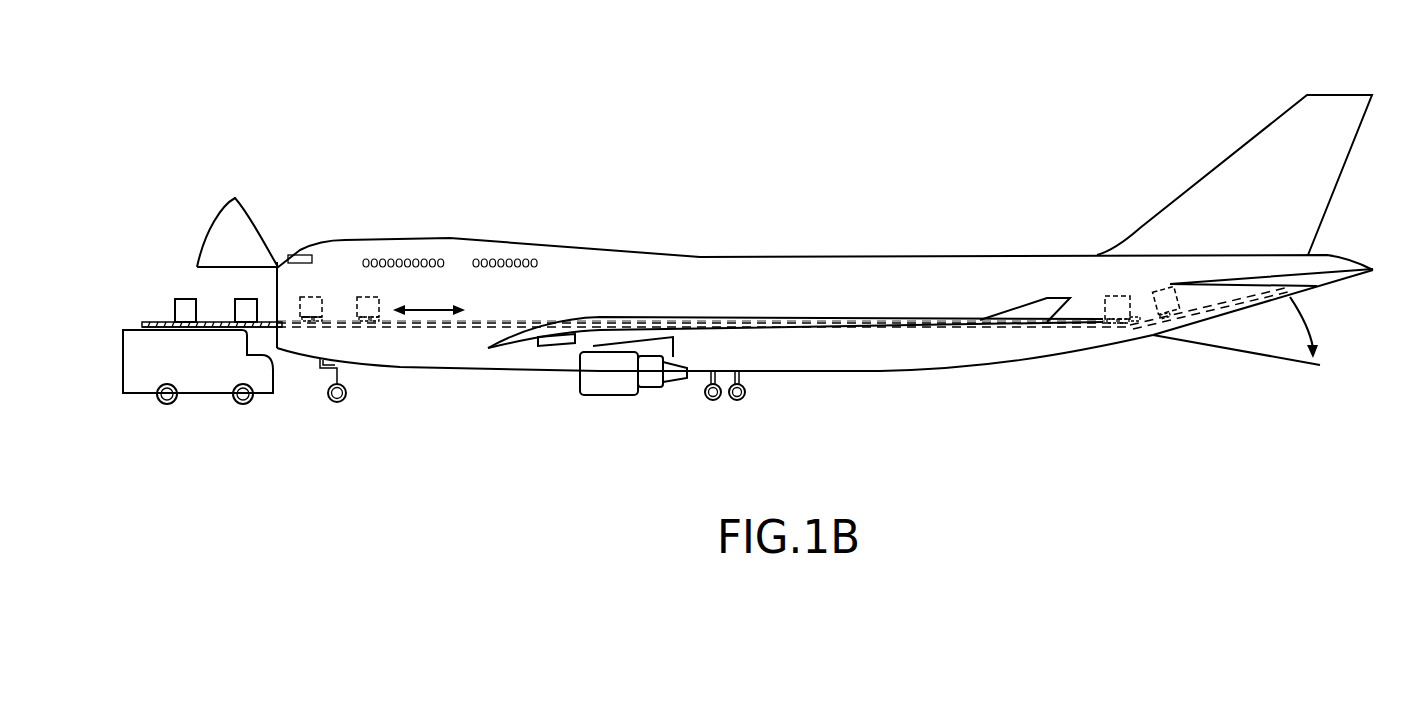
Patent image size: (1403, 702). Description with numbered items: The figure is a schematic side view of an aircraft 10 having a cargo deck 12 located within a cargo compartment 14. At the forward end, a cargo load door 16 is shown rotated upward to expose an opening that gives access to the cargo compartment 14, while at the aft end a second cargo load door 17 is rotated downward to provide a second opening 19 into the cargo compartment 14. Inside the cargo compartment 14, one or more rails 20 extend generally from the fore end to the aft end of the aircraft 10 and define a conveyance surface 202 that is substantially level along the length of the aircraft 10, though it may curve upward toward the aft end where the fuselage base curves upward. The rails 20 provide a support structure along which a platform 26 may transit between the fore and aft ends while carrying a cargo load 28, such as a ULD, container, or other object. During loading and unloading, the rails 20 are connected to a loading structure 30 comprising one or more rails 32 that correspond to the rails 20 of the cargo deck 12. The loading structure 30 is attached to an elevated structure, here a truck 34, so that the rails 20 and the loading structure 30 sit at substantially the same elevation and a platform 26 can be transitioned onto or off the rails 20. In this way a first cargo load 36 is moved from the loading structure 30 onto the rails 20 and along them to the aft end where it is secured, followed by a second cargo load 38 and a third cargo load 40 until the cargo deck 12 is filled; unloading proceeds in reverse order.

The aircraft 10 is at (343, 133).
The cargo deck 12 is at (363, 327).
The cargo compartment 14 is at (642, 264).
The cargo load door 16 is at (228, 212).
The second cargo load door 17 is at (1245, 354).
The second opening 19 is at (1328, 318).
The rails 20 is at (422, 345).
The conveyance surface 202 is at (512, 312).
The platform 26 is at (165, 322).
The cargo load 28 is at (186, 299).
The loading structure 30 is at (142, 328).
The rails 32 is at (152, 322).
The truck 34 is at (194, 394).
The first cargo load 36 is at (1118, 296).
The second cargo load 38 is at (374, 302).
The third cargo load 40 is at (318, 300).